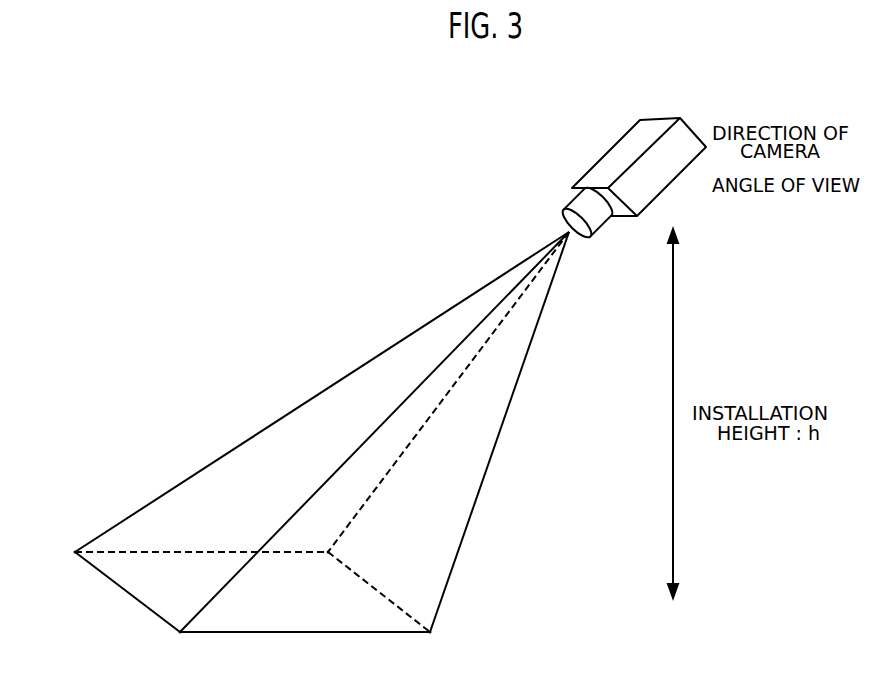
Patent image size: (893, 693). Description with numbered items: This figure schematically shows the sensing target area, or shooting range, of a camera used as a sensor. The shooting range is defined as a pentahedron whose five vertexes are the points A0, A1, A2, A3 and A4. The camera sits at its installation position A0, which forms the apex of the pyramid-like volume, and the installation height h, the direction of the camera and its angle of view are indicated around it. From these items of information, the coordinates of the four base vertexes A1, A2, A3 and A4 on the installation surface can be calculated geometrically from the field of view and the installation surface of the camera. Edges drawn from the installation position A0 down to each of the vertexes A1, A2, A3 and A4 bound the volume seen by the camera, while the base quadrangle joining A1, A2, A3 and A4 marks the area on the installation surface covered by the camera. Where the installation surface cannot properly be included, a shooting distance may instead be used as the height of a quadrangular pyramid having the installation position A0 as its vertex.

The installation position of the camera A0 is at (561, 160).
The vertex coordinate A1 is at (485, 654).
The vertex coordinate A2 is at (214, 654).
The vertex coordinate A3 is at (94, 512).
The vertex coordinate A4 is at (394, 525).